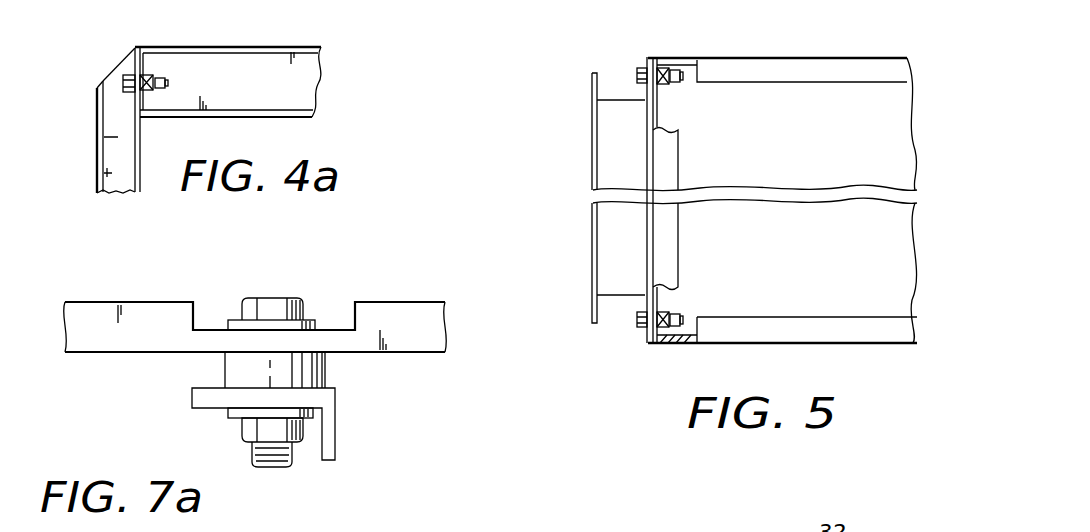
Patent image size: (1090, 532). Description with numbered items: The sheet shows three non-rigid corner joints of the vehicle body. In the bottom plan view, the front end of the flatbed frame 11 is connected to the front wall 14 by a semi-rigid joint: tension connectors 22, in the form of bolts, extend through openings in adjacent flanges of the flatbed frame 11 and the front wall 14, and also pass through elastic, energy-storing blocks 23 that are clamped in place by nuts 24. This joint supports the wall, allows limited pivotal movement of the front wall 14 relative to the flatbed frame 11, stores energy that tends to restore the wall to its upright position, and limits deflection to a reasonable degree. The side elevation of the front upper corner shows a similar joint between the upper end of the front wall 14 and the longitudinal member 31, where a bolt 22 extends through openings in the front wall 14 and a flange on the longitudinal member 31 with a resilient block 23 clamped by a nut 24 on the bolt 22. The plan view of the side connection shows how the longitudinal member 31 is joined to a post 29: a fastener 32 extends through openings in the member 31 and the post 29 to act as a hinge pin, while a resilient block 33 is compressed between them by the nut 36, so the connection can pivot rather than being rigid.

In FIG. 5, the flatbed frame 11 is at (860, 63).
In FIG. 4A, the front wall 14 is at (105, 128).
In FIG. 5, the front wall 14 is at (588, 115).
In FIG. 4A, the tension connector 22 is at (123, 83).
In FIG. 5, the tension connector 22 is at (641, 68).
In FIG. 4A, the resilient block 23 is at (148, 74).
In FIG. 5, the resilient block 23 is at (662, 67).
In FIG. 4A, the nut 24 is at (165, 80).
In FIG. 5, the nut 24 is at (673, 67).
In FIG. 7A, the post 29 is at (330, 414).
In FIG. 4A, the longitudinal member 31 is at (264, 53).
In FIG. 7A, the longitudinal member 31 is at (162, 307).
In FIG. 7A, the fastener 32 is at (275, 302).
In FIG. 7A, the resilient block 33 is at (224, 372).
In FIG. 7A, the nut 36 is at (247, 430).